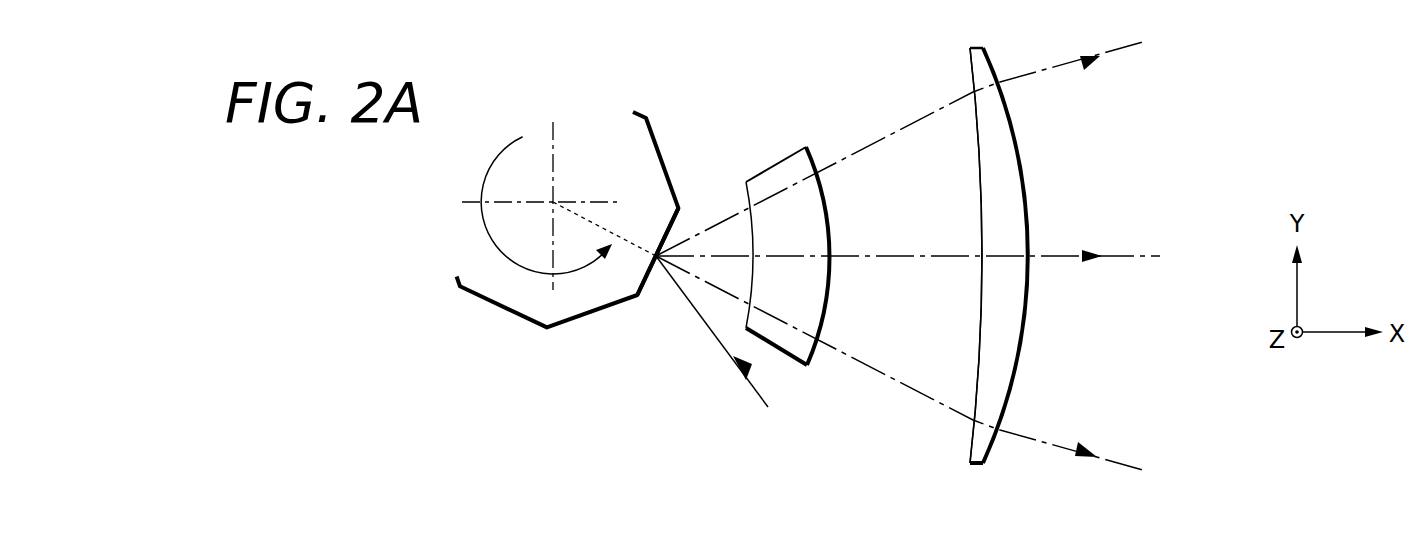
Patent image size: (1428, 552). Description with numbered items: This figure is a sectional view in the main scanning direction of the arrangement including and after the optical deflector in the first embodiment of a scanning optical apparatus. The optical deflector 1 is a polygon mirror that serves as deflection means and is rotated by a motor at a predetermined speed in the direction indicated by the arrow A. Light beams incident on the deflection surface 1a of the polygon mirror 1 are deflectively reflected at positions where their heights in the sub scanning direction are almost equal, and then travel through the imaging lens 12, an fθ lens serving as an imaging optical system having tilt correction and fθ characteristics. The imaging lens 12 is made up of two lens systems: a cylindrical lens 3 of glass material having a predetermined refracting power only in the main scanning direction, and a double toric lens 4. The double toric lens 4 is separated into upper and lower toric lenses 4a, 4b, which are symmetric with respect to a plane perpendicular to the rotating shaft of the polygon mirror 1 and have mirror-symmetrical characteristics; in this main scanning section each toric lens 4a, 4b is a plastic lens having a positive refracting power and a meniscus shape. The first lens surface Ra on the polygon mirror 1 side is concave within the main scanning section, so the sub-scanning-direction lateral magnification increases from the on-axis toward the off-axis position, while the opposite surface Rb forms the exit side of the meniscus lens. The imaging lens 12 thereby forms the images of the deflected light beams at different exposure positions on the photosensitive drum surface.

The optical deflector 1 is at (572, 308).
The deflection surface 1a is at (650, 283).
The arrow A is at (512, 260).
The cylindrical lens 3 is at (820, 365).
The double toric lens 4 is at (990, 300).
The toric lens 4a is at (992, 277).
The toric lens 4b is at (978, 504).
The first lens surface Ra is at (977, 357).
The exit surface of second imaging lens Rb is at (1022, 343).
The imaging lens 12 is at (913, 300).